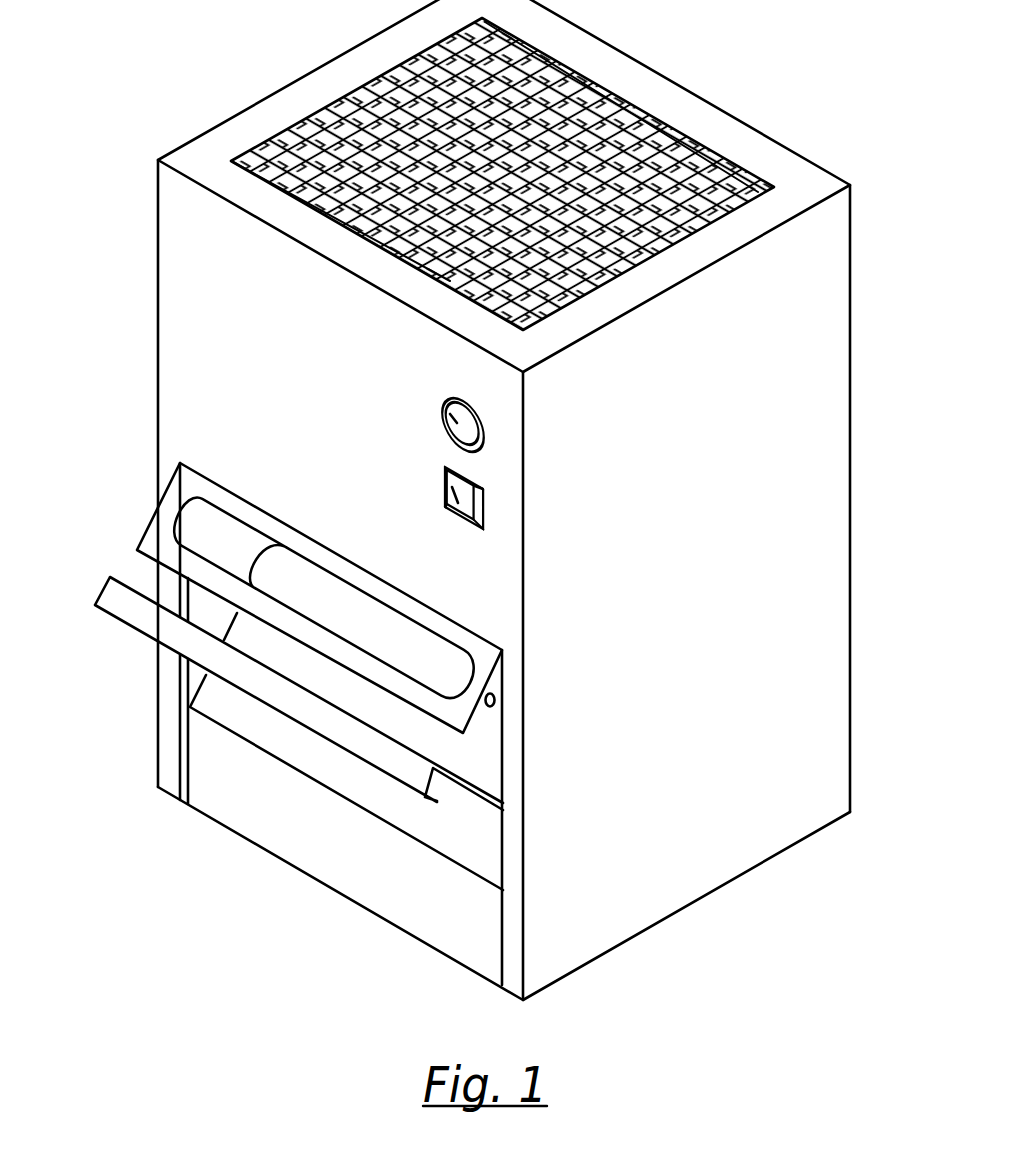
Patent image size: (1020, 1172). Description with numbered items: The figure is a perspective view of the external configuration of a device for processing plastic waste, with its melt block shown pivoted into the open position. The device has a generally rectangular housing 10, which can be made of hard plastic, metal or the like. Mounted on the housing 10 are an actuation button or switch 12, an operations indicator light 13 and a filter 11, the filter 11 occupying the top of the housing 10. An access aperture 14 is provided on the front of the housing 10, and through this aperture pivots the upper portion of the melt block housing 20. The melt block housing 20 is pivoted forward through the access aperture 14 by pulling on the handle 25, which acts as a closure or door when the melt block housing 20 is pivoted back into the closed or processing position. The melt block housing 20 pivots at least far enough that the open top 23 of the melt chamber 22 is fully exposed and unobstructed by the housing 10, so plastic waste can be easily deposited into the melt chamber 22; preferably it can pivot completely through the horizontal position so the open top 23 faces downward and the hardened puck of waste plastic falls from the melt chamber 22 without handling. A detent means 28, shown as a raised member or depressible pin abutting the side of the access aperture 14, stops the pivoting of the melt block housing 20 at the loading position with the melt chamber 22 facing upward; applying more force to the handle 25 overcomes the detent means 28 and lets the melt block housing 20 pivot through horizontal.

The housing 10 is at (748, 556).
The filter 11 is at (557, 108).
The actuation button or switch 12 is at (445, 480).
The operations indicator light 13 is at (447, 408).
The access aperture 14 is at (505, 866).
The melt block housing 20 is at (466, 760).
The melt chamber 22 is at (230, 543).
The open top 23 is at (352, 540).
The handle 25 is at (147, 618).
The detent means 28 is at (506, 688).